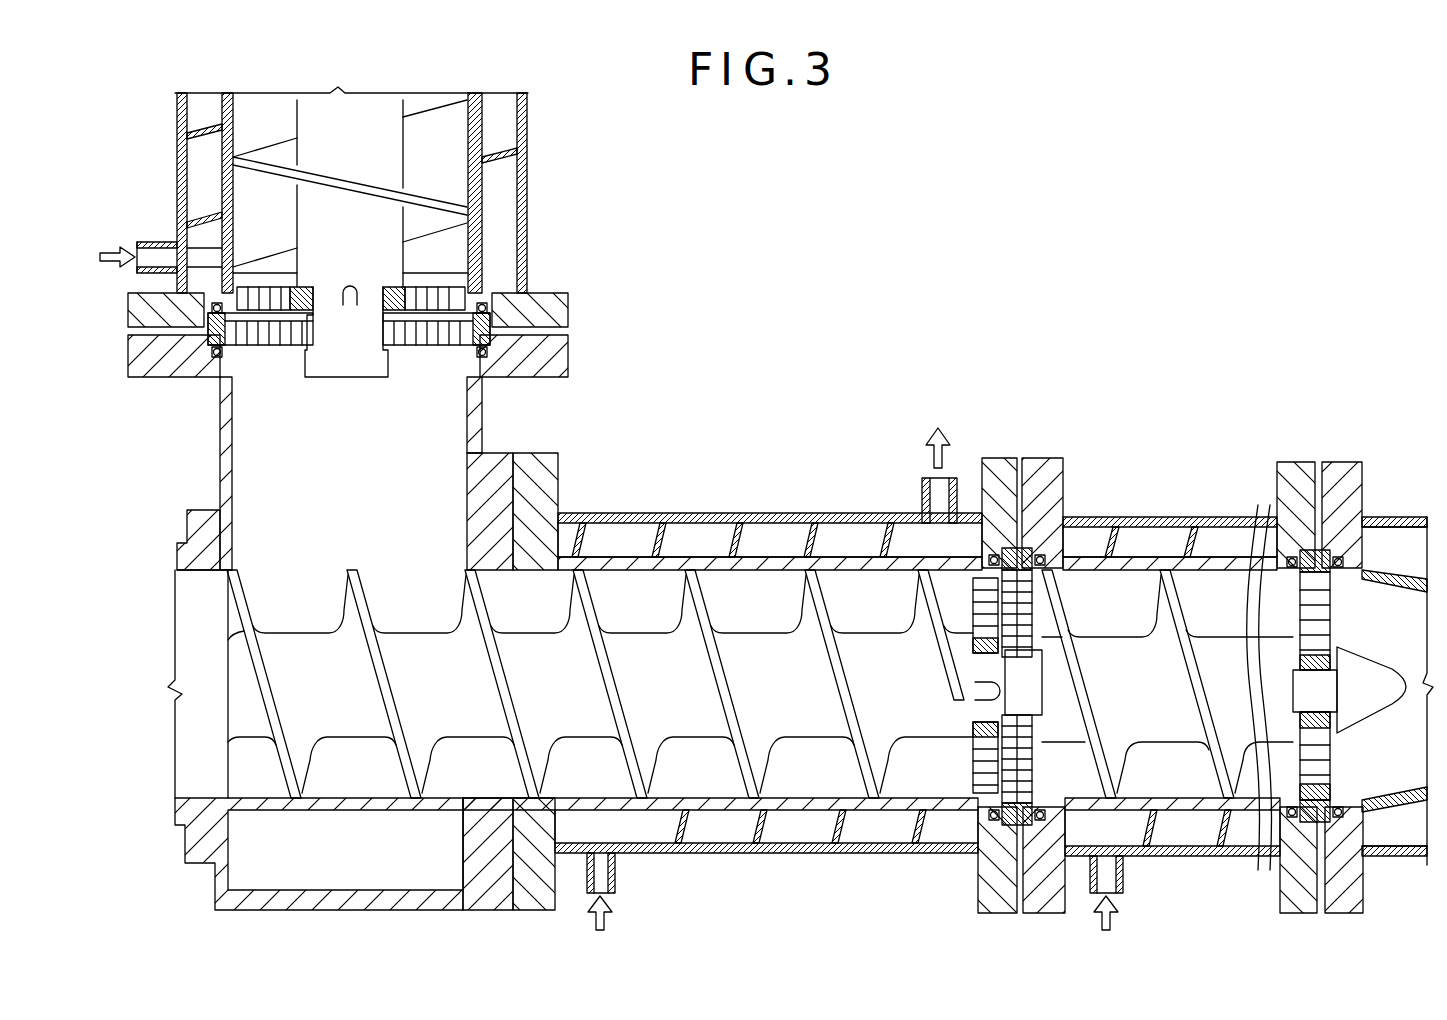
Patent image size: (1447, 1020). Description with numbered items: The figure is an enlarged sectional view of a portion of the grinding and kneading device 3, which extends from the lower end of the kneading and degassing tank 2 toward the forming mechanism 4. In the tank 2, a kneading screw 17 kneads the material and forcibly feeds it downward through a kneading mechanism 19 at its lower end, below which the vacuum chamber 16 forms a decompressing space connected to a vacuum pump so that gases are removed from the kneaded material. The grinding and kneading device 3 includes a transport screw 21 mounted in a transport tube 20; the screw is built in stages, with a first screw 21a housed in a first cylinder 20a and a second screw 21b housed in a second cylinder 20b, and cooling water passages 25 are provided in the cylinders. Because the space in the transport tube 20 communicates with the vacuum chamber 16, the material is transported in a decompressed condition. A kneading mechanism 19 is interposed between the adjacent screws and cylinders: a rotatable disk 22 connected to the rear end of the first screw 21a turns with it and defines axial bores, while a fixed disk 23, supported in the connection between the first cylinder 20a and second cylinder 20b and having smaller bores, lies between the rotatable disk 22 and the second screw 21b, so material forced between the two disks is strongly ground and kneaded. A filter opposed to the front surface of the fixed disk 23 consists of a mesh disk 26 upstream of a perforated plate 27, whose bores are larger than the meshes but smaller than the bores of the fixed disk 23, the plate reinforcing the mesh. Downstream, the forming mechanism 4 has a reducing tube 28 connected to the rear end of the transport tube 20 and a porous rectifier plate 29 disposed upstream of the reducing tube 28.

The kneading and degassing tank 2 is at (622, 287).
The grinding and kneading device 3 is at (947, 374).
The forming mechanism 4 is at (1389, 405).
The vacuum chamber 16 is at (367, 473).
The kneading screw 17 is at (433, 192).
The kneading mechanism 19 is at (441, 270).
The transport tube 20 is at (991, 625).
The first cylinder 20a is at (707, 553).
The second cylinder 20b is at (1095, 553).
The transport screw 21 is at (816, 618).
The first screw 21a is at (367, 592).
The second screw 21b is at (1127, 640).
The rotatable disk 22 is at (440, 290).
The fixed disk 23 is at (490, 333).
The cooling water passages 25 is at (778, 513).
The mesh disk 26 is at (972, 624).
The perforated plate 27 is at (1030, 788).
The reducing tube 28 is at (1393, 578).
The porous rectifier plate 29 is at (1330, 618).